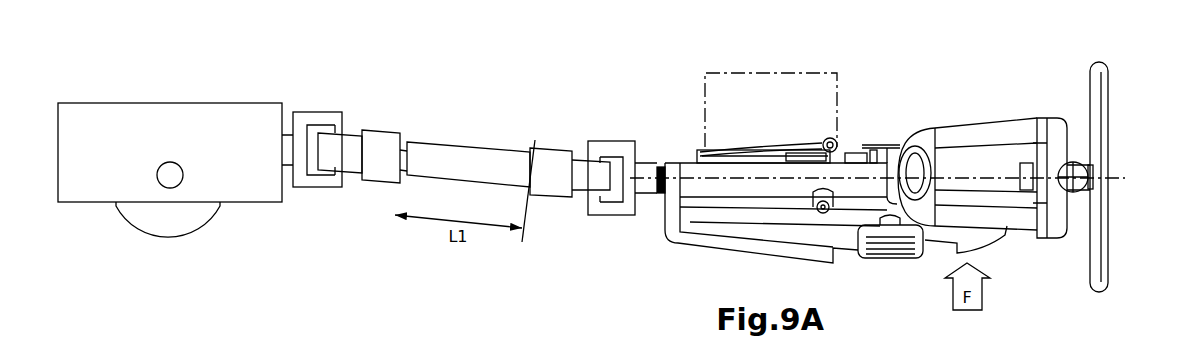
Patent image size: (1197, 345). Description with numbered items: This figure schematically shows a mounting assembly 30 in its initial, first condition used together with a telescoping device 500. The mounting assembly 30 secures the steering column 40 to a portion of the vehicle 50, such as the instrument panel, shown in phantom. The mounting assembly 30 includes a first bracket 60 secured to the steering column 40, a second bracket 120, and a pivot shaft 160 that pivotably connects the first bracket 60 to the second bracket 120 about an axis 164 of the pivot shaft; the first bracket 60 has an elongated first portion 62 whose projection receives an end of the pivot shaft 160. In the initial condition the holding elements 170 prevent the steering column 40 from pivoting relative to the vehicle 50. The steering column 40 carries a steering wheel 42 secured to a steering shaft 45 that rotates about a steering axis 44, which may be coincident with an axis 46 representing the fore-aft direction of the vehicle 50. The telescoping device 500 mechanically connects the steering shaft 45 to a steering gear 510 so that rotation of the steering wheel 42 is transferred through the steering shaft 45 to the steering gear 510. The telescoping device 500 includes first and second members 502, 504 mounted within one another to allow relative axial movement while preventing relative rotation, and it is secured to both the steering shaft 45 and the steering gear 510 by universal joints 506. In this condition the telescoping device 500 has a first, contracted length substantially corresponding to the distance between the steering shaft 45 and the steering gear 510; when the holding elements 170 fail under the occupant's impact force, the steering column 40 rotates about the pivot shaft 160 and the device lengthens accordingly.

The steering gear 510 is at (195, 125).
The universal joints 506 is at (323, 108).
The telescoping device 500 is at (471, 136).
The second member 504 is at (391, 228).
The first member 502 is at (497, 161).
The steering shaft 45 is at (660, 195).
The mounting assembly 30 is at (858, 130).
The first bracket 60 is at (742, 168).
The second bracket 120 is at (720, 146).
The holding elements 170 is at (772, 146).
The first portion 62 is at (792, 152).
The axis 164 is at (834, 139).
The pivot shaft 160 is at (845, 137).
The vehicle 50 is at (768, 72).
The steering column 40 is at (981, 114).
The steering axis 44 is at (1126, 175).
The axis 46 is at (1126, 175).
The steering wheel 42 is at (1100, 263).